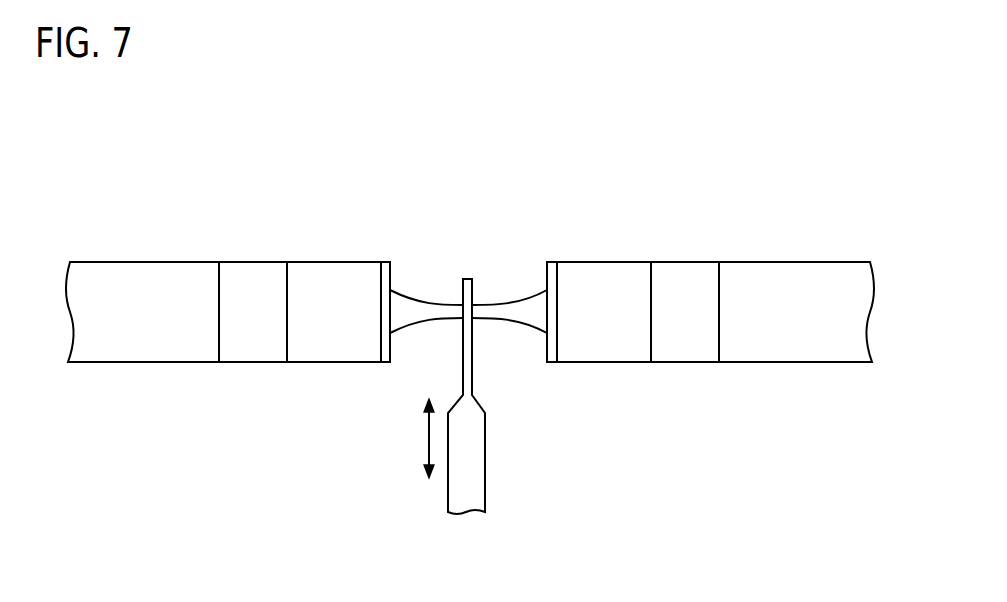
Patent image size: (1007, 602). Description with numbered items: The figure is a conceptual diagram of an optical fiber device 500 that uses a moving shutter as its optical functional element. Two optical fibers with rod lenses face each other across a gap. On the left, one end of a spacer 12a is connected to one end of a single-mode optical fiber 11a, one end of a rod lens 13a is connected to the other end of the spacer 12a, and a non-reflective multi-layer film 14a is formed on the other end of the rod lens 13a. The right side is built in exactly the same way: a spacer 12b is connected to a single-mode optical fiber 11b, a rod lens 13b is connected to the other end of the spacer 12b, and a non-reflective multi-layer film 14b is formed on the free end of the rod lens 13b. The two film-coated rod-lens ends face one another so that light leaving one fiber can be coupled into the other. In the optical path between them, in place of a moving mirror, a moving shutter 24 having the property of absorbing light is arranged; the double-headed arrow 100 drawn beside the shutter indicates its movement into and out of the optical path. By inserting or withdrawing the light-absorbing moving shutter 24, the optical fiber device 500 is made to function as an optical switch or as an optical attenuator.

The optical fiber device 500 is at (588, 134).
The single-mode optical fiber 11a is at (142, 262).
The spacer 12a is at (257, 262).
The rod lens 13a is at (365, 262).
The non-reflective multi-layer film 14a is at (385, 358).
The single-mode optical fiber 11b is at (793, 262).
The spacer 12b is at (685, 262).
The rod lens 13b is at (593, 262).
The non-reflective multi-layer film 14b is at (551, 362).
The moving shutter 24 is at (468, 278).
The cutting direction 100 is at (417, 288).